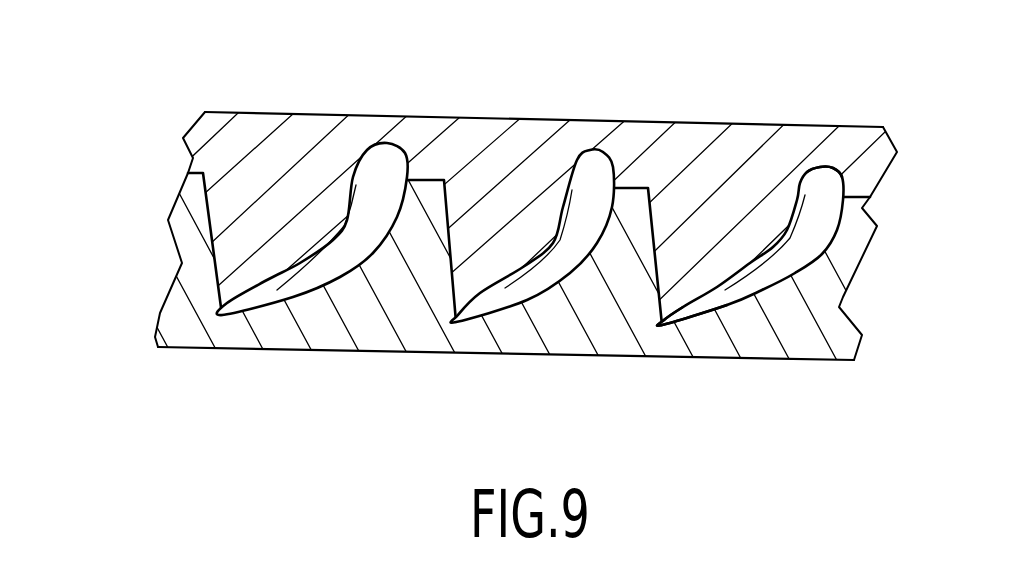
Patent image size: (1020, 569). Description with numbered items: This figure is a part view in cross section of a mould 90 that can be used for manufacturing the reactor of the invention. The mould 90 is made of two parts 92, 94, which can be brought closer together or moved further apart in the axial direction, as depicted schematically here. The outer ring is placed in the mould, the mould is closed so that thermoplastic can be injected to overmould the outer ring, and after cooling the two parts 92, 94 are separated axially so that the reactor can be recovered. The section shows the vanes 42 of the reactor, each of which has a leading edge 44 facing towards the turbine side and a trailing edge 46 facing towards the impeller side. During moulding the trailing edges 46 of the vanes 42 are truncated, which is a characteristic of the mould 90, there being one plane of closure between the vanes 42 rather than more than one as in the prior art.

The mould 90 is at (148, 212).
The mould part 92 is at (500, 117).
The mould part 94 is at (420, 352).
The vanes 42 is at (795, 260).
The leading edge 44 is at (823, 166).
The trailing edge 46 is at (665, 325).